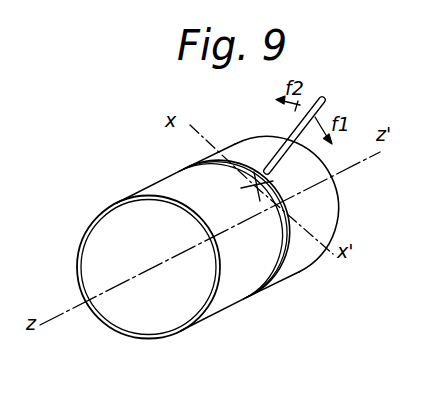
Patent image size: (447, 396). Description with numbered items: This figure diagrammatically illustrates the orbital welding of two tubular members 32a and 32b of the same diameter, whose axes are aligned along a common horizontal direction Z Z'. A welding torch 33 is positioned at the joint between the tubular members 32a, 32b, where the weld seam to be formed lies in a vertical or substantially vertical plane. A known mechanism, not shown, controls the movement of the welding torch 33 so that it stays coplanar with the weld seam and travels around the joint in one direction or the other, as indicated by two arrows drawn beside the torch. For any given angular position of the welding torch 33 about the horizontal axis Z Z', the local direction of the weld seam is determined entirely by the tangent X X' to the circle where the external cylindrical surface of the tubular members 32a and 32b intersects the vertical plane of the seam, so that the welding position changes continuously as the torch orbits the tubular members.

The tubular member 32a is at (229, 293).
The tubular member 32b is at (303, 256).
The welding torch 33 is at (294, 128).